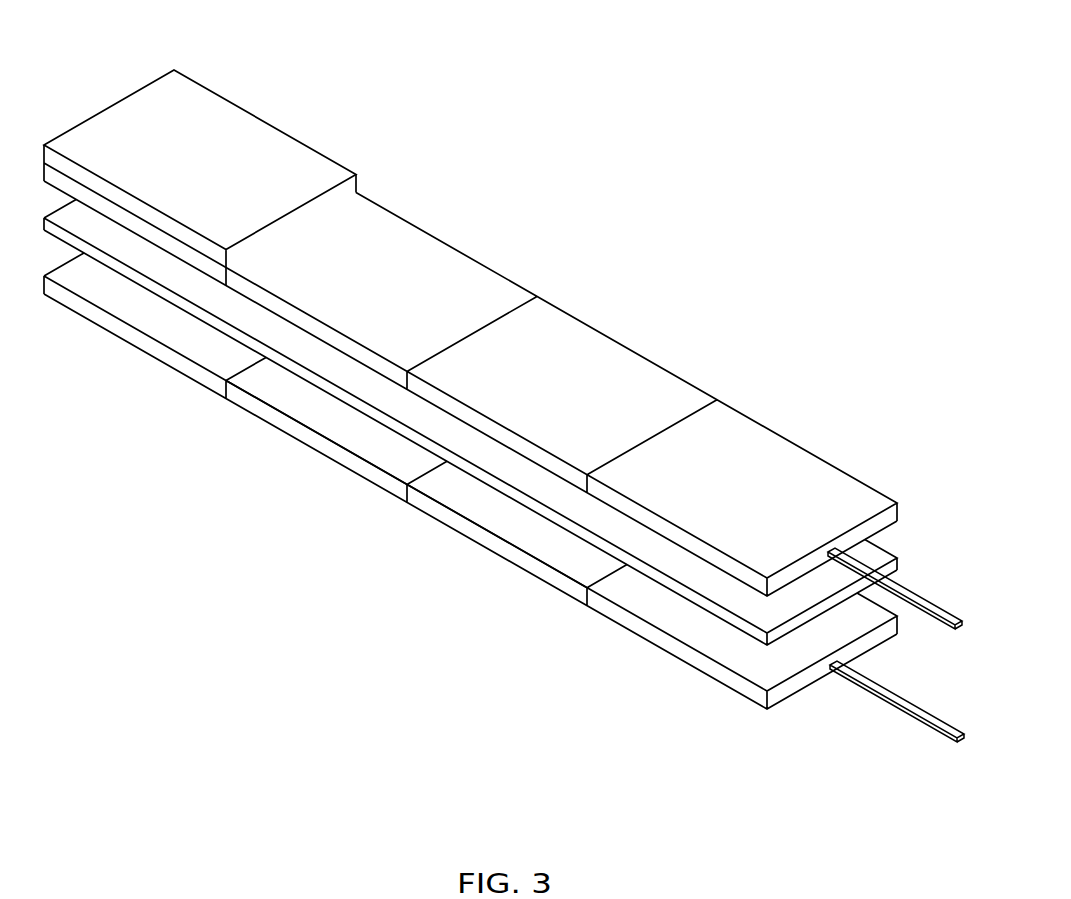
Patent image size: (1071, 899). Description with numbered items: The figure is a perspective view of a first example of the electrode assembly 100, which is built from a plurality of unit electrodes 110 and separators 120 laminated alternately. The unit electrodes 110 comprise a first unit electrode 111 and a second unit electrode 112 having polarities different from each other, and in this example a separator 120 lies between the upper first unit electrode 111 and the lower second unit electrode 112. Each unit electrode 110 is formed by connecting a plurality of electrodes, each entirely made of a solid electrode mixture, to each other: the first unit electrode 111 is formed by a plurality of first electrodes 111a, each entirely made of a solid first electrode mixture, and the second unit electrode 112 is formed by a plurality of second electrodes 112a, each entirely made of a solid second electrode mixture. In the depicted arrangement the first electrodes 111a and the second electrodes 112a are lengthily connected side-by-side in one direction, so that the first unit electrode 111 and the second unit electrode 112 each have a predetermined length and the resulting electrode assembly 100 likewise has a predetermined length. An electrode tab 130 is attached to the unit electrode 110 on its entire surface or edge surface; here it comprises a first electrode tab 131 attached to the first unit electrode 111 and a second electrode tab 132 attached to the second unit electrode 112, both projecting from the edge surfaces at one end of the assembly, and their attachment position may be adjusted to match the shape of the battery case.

The electrode assembly 100 is at (702, 130).
The unit electrode 110 is at (176, 568).
The first unit electrode 111 is at (773, 252).
The first electrode 111a is at (230, 137).
The second unit electrode 112 is at (600, 710).
The second electrode 112a is at (522, 532).
The separator 120 is at (360, 408).
The electrode tab 130 is at (810, 775).
The first electrode tab 131 is at (926, 605).
The second electrode tab 132 is at (865, 682).